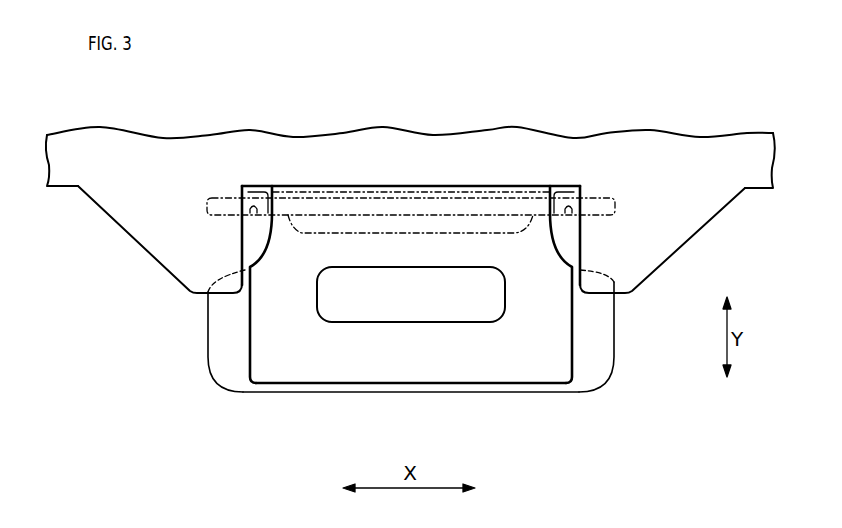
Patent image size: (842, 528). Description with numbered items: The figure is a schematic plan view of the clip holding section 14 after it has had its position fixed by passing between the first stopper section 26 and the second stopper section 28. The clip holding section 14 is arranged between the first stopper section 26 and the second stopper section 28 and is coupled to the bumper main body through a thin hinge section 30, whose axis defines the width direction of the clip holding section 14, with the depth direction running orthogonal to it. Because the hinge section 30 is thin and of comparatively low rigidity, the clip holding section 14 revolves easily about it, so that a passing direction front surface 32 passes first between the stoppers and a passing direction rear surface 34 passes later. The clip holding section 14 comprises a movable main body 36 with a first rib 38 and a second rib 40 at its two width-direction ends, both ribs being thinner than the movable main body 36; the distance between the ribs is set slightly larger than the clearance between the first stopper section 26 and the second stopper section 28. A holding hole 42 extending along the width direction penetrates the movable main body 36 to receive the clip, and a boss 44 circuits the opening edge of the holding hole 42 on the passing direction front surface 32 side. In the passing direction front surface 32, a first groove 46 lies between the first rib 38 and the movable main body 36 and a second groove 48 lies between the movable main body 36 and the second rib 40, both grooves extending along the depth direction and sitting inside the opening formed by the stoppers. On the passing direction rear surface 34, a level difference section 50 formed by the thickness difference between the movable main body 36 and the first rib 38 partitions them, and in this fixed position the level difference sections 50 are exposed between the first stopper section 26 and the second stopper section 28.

The clip holding section 14 is at (615, 191).
The first stopper section 26 is at (197, 283).
The second stopper section 28 is at (627, 283).
The hinge section 30 is at (342, 185).
The passing direction front surface 32 is at (283, 218).
The passing direction rear surface 34 is at (443, 190).
The movable main body 36 is at (433, 377).
The first rib 38 is at (232, 373).
The second rib 40 is at (590, 372).
The holding hole 42 is at (356, 321).
The boss 44 is at (518, 229).
The first groove 46 is at (253, 214).
The second groove 48 is at (569, 214).
The level difference section 50 is at (253, 192).